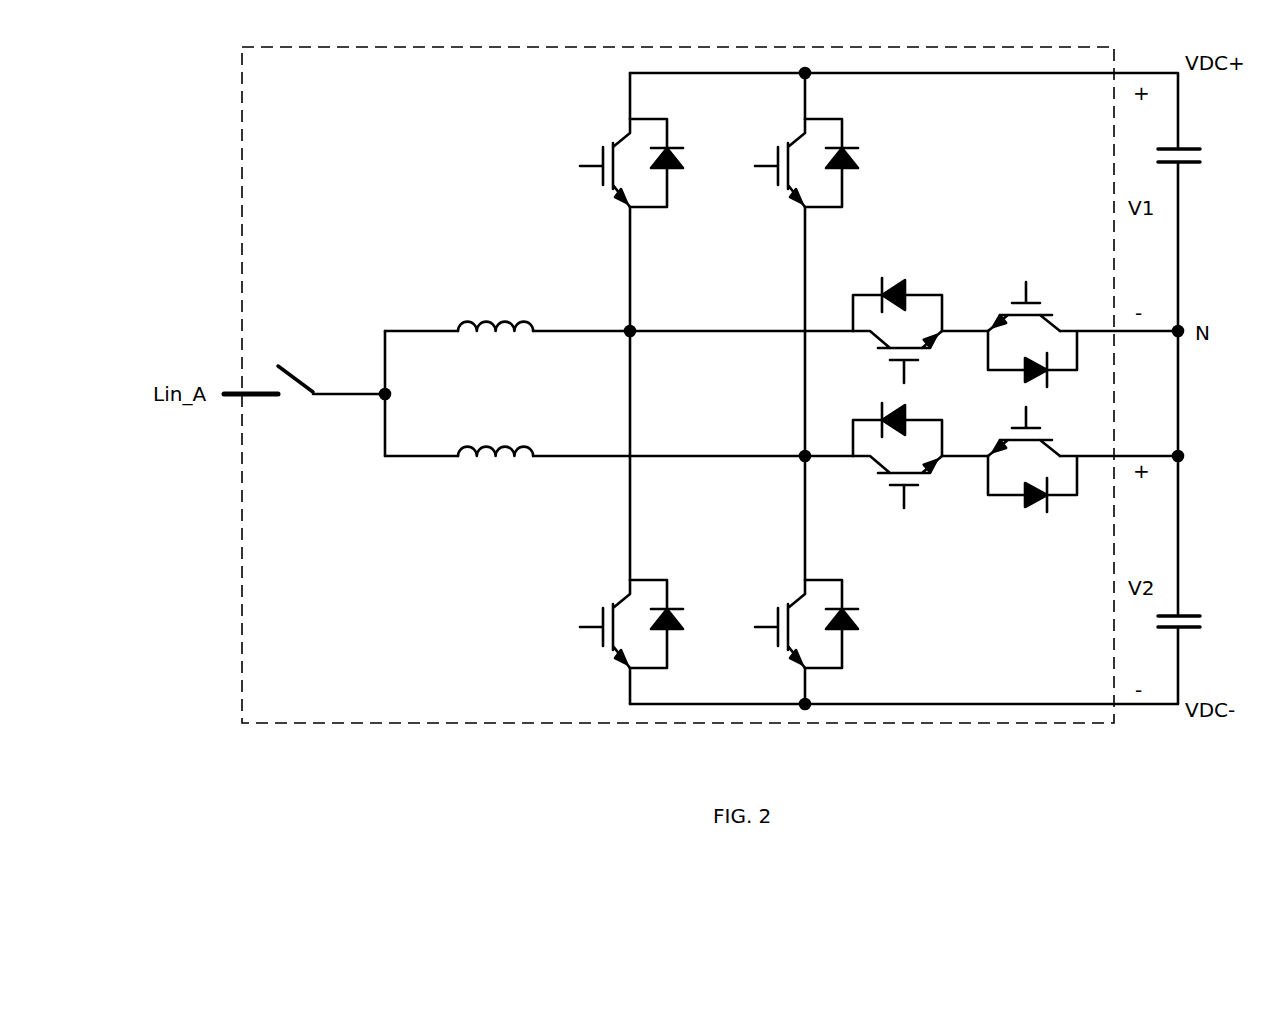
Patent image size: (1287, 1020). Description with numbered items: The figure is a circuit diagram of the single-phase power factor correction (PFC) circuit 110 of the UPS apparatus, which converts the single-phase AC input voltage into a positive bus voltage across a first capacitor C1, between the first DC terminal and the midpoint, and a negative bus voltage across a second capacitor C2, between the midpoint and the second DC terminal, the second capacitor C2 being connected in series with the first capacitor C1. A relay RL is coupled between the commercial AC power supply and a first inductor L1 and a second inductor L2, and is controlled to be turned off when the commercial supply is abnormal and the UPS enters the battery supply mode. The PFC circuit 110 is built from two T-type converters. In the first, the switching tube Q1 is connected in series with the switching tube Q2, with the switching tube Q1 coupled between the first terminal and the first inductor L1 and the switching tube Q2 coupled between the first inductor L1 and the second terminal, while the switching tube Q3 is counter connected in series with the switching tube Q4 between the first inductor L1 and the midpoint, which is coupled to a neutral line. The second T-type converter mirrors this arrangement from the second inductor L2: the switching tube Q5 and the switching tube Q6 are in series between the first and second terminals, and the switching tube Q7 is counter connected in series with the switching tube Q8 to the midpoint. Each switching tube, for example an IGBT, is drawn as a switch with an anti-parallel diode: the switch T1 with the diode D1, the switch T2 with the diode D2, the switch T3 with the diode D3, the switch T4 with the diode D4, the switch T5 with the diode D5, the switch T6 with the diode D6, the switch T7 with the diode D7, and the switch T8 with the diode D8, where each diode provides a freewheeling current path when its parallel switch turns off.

The PFC circuit 110 is at (311, 711).
The relay RL is at (295, 396).
The first inductor L1 is at (495, 311).
The second inductor L2 is at (495, 436).
The first capacitor C1 is at (1194, 155).
The second capacitor C2 is at (1194, 623).
The switching tube Q1 is at (642, 146).
The switching tube Q2 is at (642, 607).
The switching tube Q3 is at (904, 327).
The switching tube Q4 is at (1083, 339).
The switching tube Q5 is at (817, 146).
The switching tube Q6 is at (817, 607).
The switching tube Q7 is at (904, 452).
The switching tube Q8 is at (1083, 463).
The switch T1 is at (611, 163).
The switch T2 is at (611, 624).
The switch T3 is at (897, 353).
The switch T4 is at (1024, 311).
The switch T5 is at (786, 163).
The switch T6 is at (786, 624).
The switch T7 is at (897, 478).
The switch T8 is at (1024, 436).
The diode D1 is at (677, 171).
The diode D2 is at (677, 637).
The diode D3 is at (910, 291).
The diode D4 is at (1020, 375).
The diode D5 is at (852, 171).
The diode D6 is at (852, 637).
The diode D7 is at (910, 416).
The diode D8 is at (1020, 499).